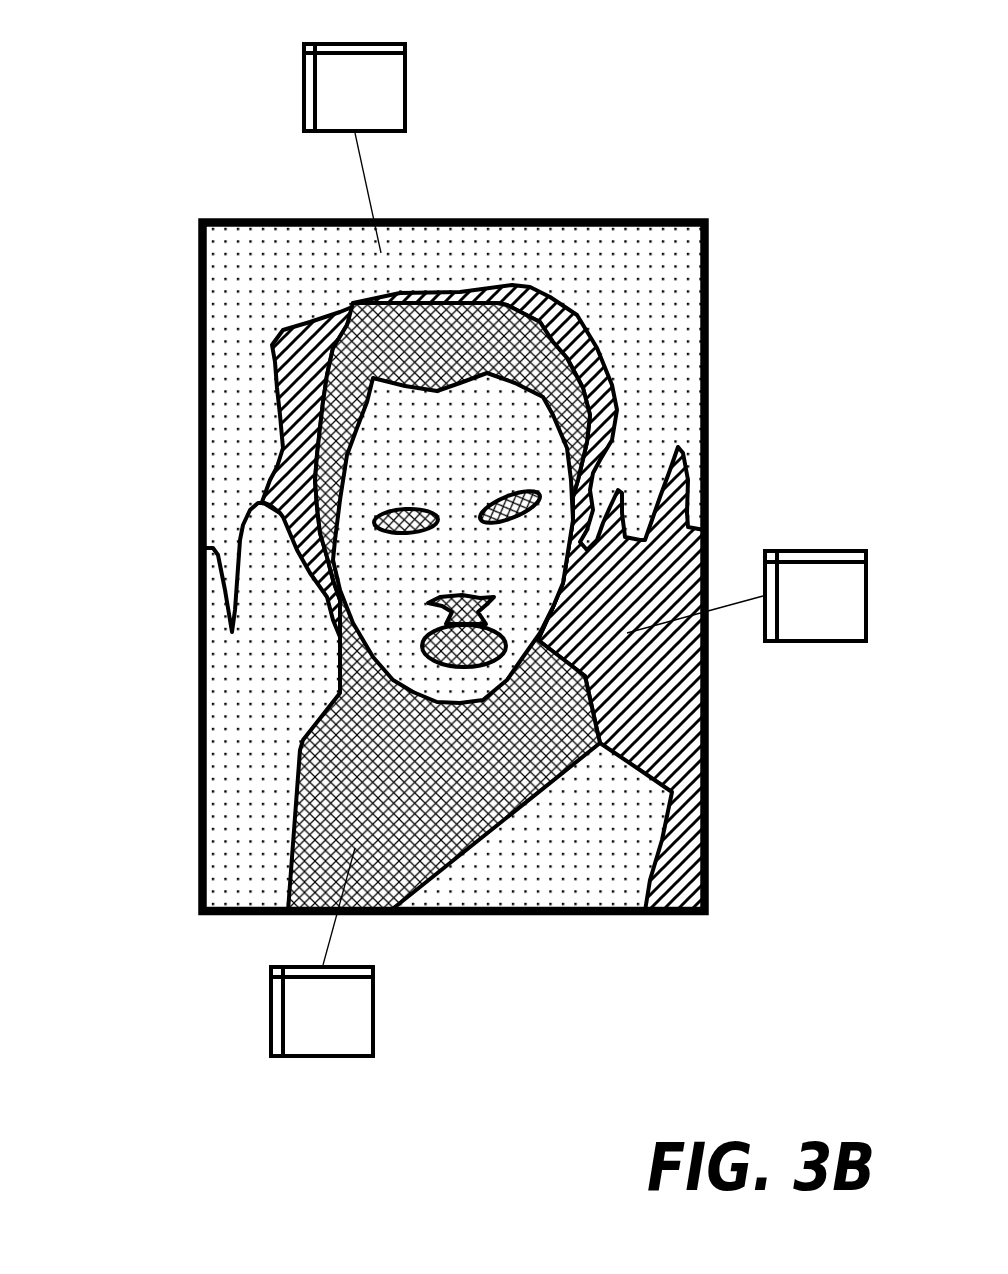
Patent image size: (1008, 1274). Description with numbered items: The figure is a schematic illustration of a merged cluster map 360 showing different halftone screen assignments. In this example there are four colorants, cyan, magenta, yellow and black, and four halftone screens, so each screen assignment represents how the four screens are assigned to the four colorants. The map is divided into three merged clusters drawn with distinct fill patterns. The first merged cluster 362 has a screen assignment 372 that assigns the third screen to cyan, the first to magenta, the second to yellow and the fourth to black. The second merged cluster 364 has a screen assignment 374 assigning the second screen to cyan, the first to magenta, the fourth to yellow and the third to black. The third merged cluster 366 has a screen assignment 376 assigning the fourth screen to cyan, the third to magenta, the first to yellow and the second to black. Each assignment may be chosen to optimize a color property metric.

The merged cluster map 360 is at (116, 181).
The first merged cluster 362 is at (432, 828).
The second merged cluster 364 is at (683, 713).
The third merged cluster 366 is at (215, 417).
The screen assignment 372 is at (267, 1017).
The screen assignment 374 is at (817, 550).
The screen assignment 376 is at (302, 85).